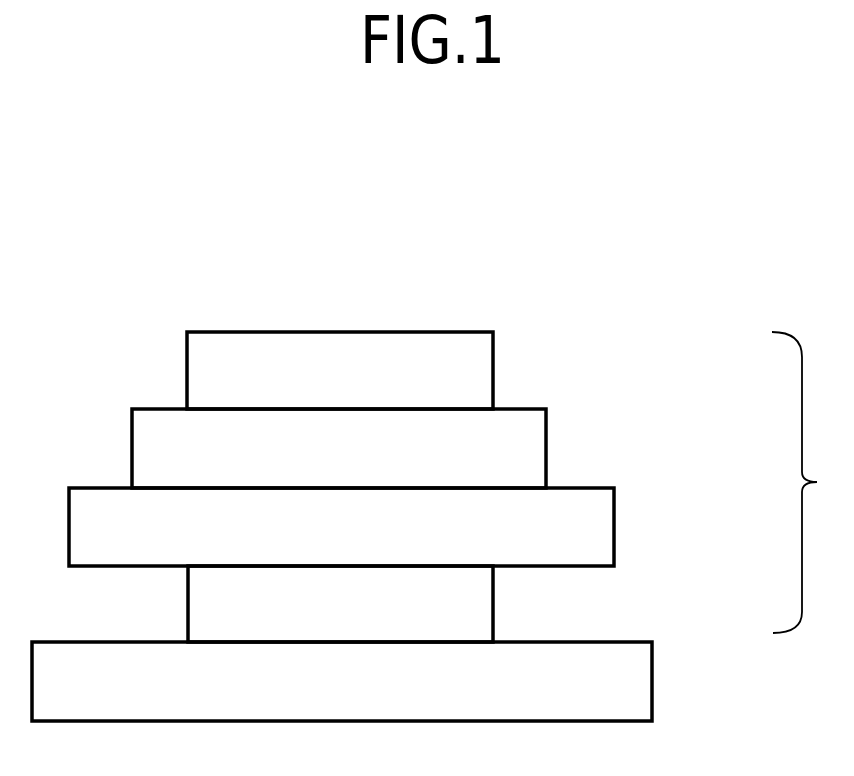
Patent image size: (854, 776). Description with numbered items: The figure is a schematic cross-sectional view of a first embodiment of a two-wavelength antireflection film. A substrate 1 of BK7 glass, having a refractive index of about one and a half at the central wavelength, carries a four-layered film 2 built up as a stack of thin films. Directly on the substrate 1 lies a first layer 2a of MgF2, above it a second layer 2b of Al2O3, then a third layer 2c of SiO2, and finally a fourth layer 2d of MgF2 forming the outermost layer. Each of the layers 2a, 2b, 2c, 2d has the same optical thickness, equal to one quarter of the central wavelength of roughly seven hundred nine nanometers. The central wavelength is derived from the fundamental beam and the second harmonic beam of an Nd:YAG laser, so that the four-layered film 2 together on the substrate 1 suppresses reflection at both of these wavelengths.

The substrate 1 is at (643, 682).
The four-layered film 2 is at (850, 501).
The first layer 2a is at (483, 607).
The second layer 2b is at (600, 530).
The third layer 2c is at (535, 447).
The fourth layer 2d is at (482, 370).